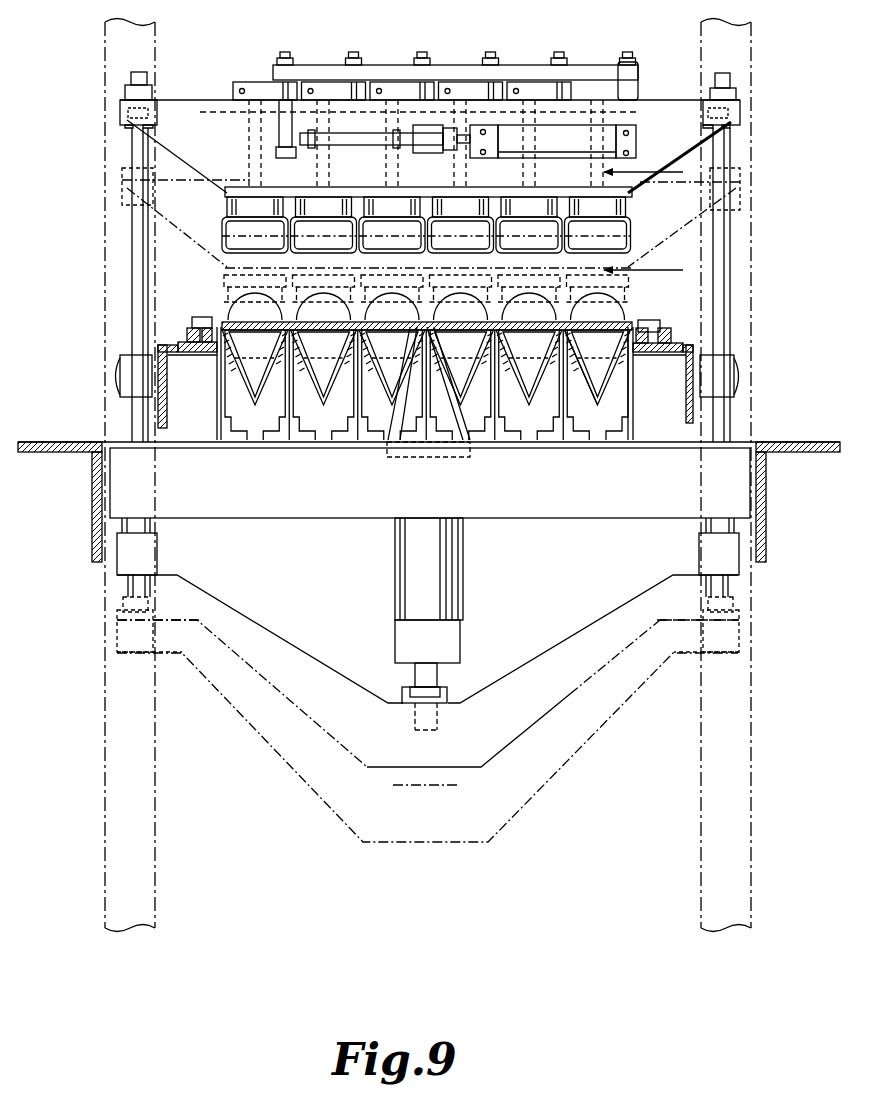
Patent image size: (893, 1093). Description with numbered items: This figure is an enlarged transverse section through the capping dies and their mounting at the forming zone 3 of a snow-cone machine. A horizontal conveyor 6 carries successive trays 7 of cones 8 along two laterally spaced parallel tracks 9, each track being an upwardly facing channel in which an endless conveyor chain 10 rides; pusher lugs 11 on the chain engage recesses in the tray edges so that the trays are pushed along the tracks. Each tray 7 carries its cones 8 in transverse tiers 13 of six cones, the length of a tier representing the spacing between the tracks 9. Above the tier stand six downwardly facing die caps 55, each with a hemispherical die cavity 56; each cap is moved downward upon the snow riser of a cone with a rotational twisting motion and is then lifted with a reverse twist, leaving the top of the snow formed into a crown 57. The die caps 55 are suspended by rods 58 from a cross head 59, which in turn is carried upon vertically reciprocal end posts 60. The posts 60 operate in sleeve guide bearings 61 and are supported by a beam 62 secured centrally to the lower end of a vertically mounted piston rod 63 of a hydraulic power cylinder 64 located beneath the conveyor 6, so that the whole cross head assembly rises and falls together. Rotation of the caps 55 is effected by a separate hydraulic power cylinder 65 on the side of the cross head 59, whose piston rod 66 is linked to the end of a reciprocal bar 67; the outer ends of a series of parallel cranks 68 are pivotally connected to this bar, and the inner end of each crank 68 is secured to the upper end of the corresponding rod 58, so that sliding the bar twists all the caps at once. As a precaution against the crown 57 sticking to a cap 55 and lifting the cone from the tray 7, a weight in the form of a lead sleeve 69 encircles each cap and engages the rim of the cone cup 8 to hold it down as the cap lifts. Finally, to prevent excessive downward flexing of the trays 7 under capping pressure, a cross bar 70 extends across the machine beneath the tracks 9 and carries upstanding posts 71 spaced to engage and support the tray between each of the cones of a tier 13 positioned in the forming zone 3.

The forming zone 3 is at (738, 297).
The conveyor 6 is at (186, 322).
The tray 7 is at (633, 330).
The cone 8 is at (262, 384).
The track 9 is at (187, 332).
The conveyor chain 10 is at (202, 352).
The pusher lug 11 is at (681, 182).
The transverse tier 13 is at (613, 376).
The die cap 55 is at (227, 205).
The hemispherical die cavity 56 is at (238, 225).
The crown 57 is at (320, 303).
The rod 58 is at (255, 82).
The cross head 59 is at (202, 100).
The end post 60 is at (130, 74).
The sleeve guide bearing 61 is at (128, 368).
The beam 62 is at (263, 607).
The piston rod 63 is at (440, 677).
The hydraulic power cylinder 64 is at (460, 562).
The hydraulic power cylinder 65 is at (553, 150).
The piston rod 66 is at (463, 148).
The reciprocal bar 67 is at (638, 73).
The crank 68 is at (250, 92).
The lead sleeve 69 is at (225, 242).
The cross bar 70 is at (340, 492).
The upstanding post 71 is at (215, 408).